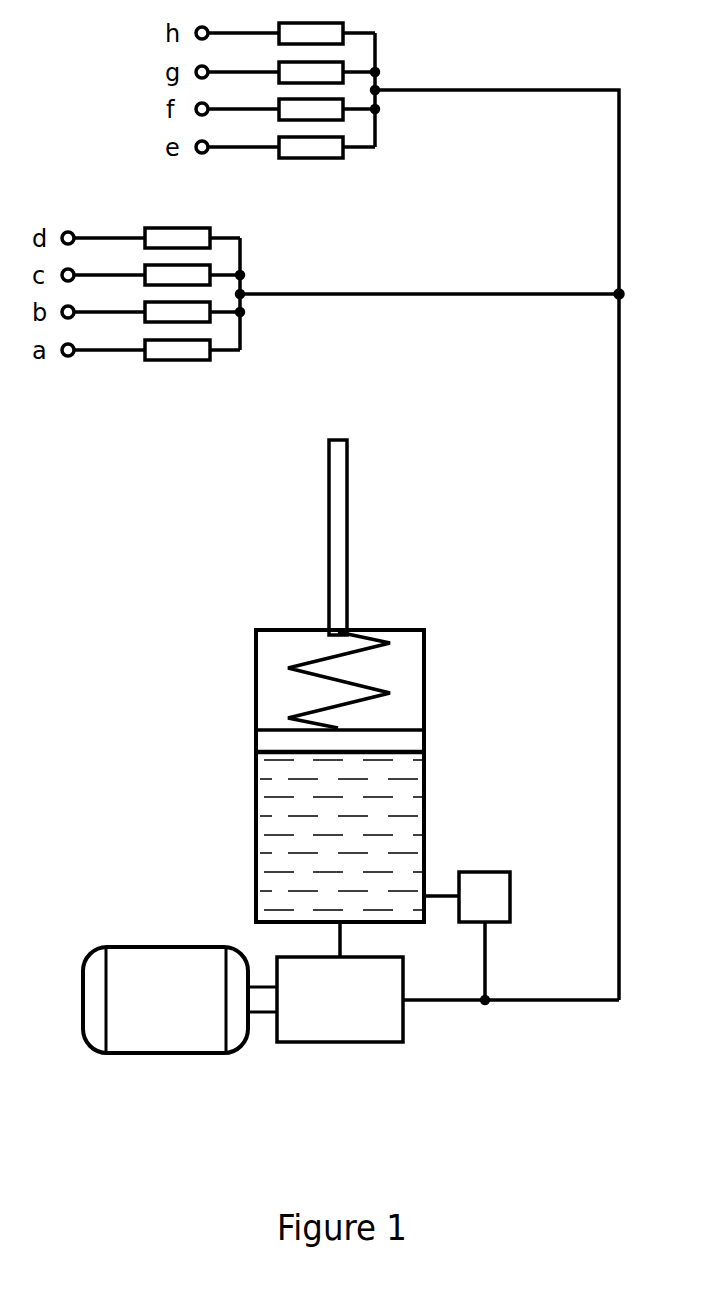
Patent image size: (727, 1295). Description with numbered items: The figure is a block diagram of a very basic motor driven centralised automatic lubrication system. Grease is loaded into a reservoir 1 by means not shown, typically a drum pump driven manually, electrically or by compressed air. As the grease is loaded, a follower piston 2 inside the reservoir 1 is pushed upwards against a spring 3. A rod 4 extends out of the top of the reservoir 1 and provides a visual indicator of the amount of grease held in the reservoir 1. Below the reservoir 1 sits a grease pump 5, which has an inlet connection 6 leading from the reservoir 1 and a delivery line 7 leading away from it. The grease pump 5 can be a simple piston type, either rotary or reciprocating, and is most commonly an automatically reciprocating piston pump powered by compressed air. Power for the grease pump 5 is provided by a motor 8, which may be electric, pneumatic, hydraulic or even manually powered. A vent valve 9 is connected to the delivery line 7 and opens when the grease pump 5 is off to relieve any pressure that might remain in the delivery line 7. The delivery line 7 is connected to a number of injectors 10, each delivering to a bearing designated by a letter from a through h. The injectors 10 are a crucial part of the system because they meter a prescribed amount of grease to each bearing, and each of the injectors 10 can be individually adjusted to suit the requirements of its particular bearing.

The reservoir 1 is at (265, 830).
The follower piston 2 is at (413, 740).
The spring 3 is at (385, 690).
The rod 4 is at (348, 518).
The grease pump 5 is at (337, 1042).
The inlet connection 6 is at (338, 940).
The delivery line 7 is at (515, 1003).
The motor 8 is at (155, 1042).
The vent valve 9 is at (507, 878).
The injectors 10 is at (175, 355).